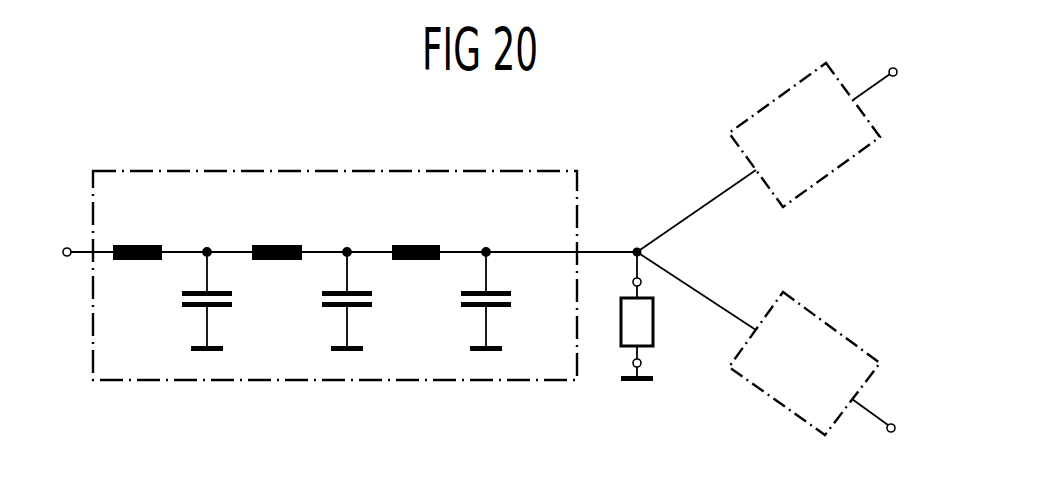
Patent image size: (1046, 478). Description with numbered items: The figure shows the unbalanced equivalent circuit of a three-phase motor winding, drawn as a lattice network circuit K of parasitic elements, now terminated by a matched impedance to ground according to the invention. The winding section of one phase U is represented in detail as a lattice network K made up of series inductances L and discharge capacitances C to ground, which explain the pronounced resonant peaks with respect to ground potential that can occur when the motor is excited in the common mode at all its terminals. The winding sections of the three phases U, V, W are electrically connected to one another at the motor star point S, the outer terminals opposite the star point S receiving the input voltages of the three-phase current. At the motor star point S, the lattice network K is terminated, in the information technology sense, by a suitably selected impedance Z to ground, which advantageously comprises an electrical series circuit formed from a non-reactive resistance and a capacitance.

The inductance L is at (135, 245).
The discharge capacitance C is at (233, 297).
The lattice network circuit K is at (92, 320).
The motor star point S is at (637, 247).
The impedance to ground Z is at (655, 323).
The phase U is at (56, 252).
The phase V is at (887, 77).
The phase W is at (889, 422).